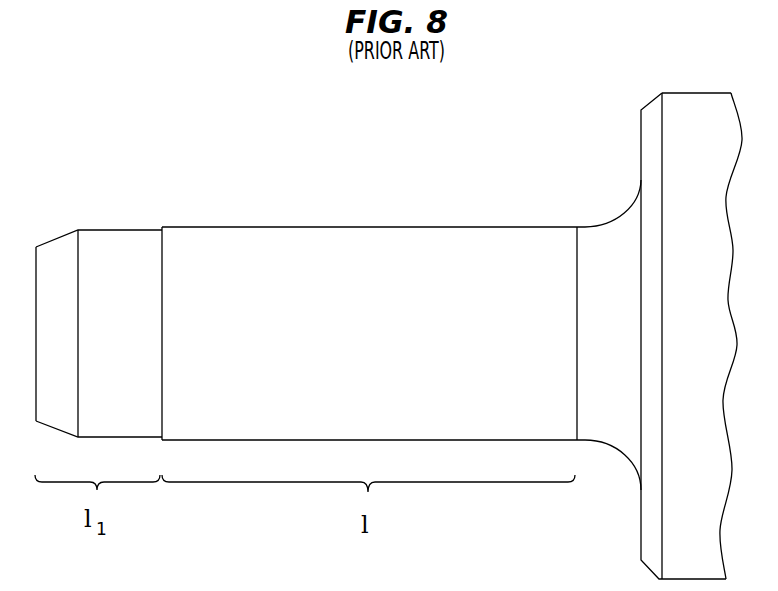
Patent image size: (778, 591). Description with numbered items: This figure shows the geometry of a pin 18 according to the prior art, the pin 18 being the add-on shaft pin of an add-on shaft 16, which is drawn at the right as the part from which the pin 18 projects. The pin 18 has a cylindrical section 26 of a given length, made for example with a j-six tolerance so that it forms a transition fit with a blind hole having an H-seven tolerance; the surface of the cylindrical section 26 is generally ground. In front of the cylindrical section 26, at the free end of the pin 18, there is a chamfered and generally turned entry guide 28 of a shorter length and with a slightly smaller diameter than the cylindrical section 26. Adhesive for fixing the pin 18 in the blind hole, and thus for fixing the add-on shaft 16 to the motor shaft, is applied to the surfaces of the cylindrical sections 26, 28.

The add-on shaft 16 is at (700, 92).
The pin 18 is at (338, 292).
The cylindrical section 26 is at (357, 227).
The entry guide 28 is at (122, 229).